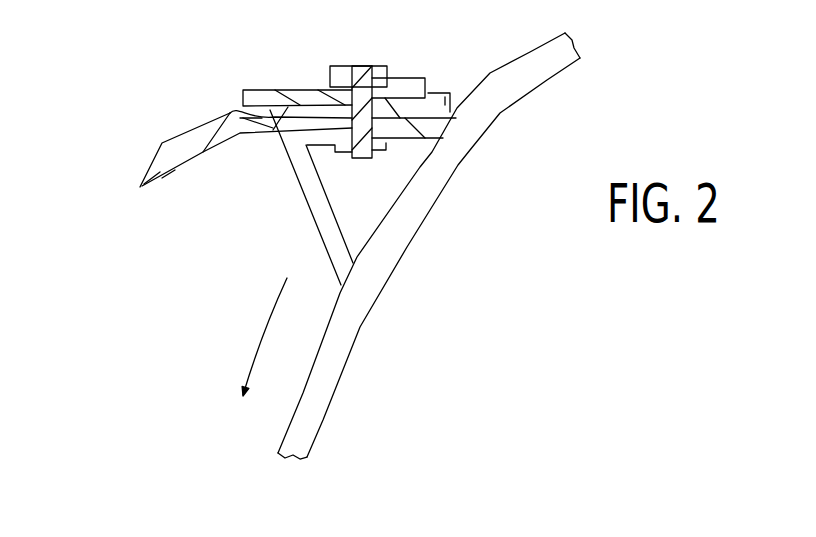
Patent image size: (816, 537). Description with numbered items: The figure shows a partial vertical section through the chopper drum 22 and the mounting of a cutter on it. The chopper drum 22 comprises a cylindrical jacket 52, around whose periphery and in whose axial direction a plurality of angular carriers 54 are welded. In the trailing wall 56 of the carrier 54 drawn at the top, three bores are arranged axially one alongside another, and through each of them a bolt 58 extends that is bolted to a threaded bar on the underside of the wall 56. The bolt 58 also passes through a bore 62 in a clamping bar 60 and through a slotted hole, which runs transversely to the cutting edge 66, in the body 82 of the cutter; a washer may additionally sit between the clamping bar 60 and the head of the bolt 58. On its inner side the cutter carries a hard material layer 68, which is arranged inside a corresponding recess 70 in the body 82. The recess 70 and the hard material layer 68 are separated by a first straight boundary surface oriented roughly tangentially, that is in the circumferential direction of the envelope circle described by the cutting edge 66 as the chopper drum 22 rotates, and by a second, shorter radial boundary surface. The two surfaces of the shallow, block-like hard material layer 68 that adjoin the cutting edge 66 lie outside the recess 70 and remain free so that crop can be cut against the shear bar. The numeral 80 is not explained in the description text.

The chopper drum 22 is at (455, 290).
The cylindrical jacket 52 is at (498, 112).
The angular carrier 54 is at (322, 215).
The trailing wall 56 is at (442, 92).
The bolt 58 is at (355, 64).
The clamping bar 60 is at (308, 93).
The bore 62 is at (404, 78).
The cutting edge 66 is at (140, 186).
The hard material layer 68 is at (162, 180).
The recess 70 is at (159, 192).
The blade 80 is at (190, 112).
The body 82 is at (238, 113).